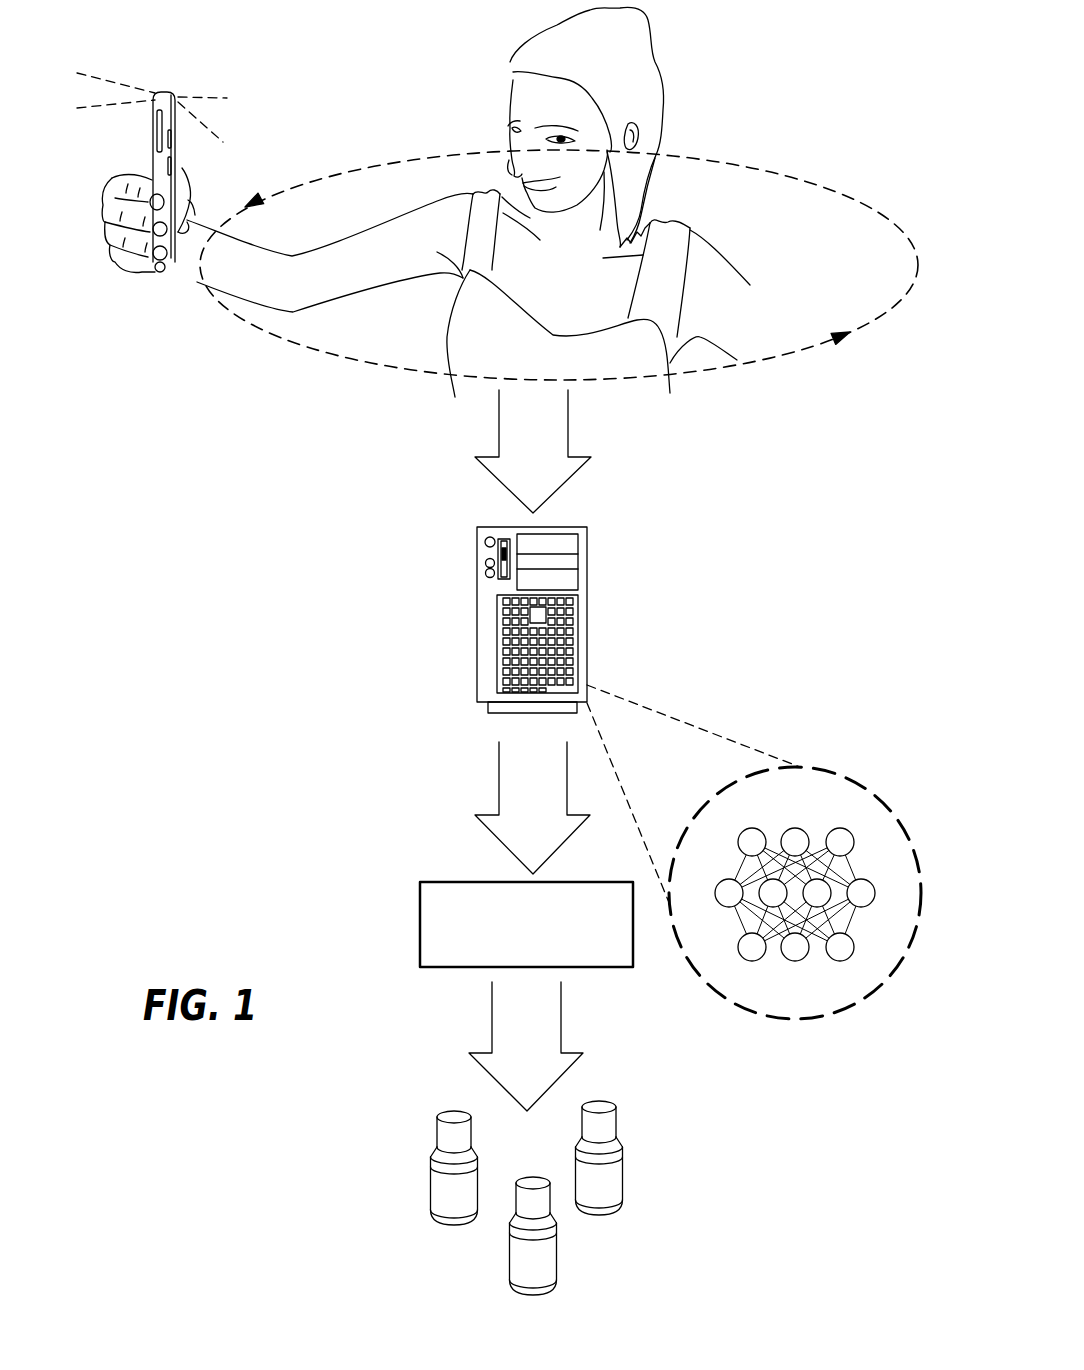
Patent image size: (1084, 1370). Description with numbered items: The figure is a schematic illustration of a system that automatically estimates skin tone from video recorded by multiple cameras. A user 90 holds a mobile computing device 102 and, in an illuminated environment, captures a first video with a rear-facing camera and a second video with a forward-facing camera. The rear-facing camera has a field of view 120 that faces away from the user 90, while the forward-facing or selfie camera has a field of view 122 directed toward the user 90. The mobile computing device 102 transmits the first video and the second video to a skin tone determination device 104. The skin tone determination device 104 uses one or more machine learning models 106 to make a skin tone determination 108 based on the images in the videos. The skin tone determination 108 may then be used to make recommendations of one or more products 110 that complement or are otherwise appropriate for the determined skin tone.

The user 90 is at (467, 117).
The mobile computing device 102 is at (167, 92).
The field of view 120 is at (92, 108).
The field of view 122 is at (207, 130).
The skin tone determination device 104 is at (587, 648).
The machine learning models 106 is at (866, 791).
The skin tone determination 108 is at (420, 918).
The products 110 is at (418, 1139).